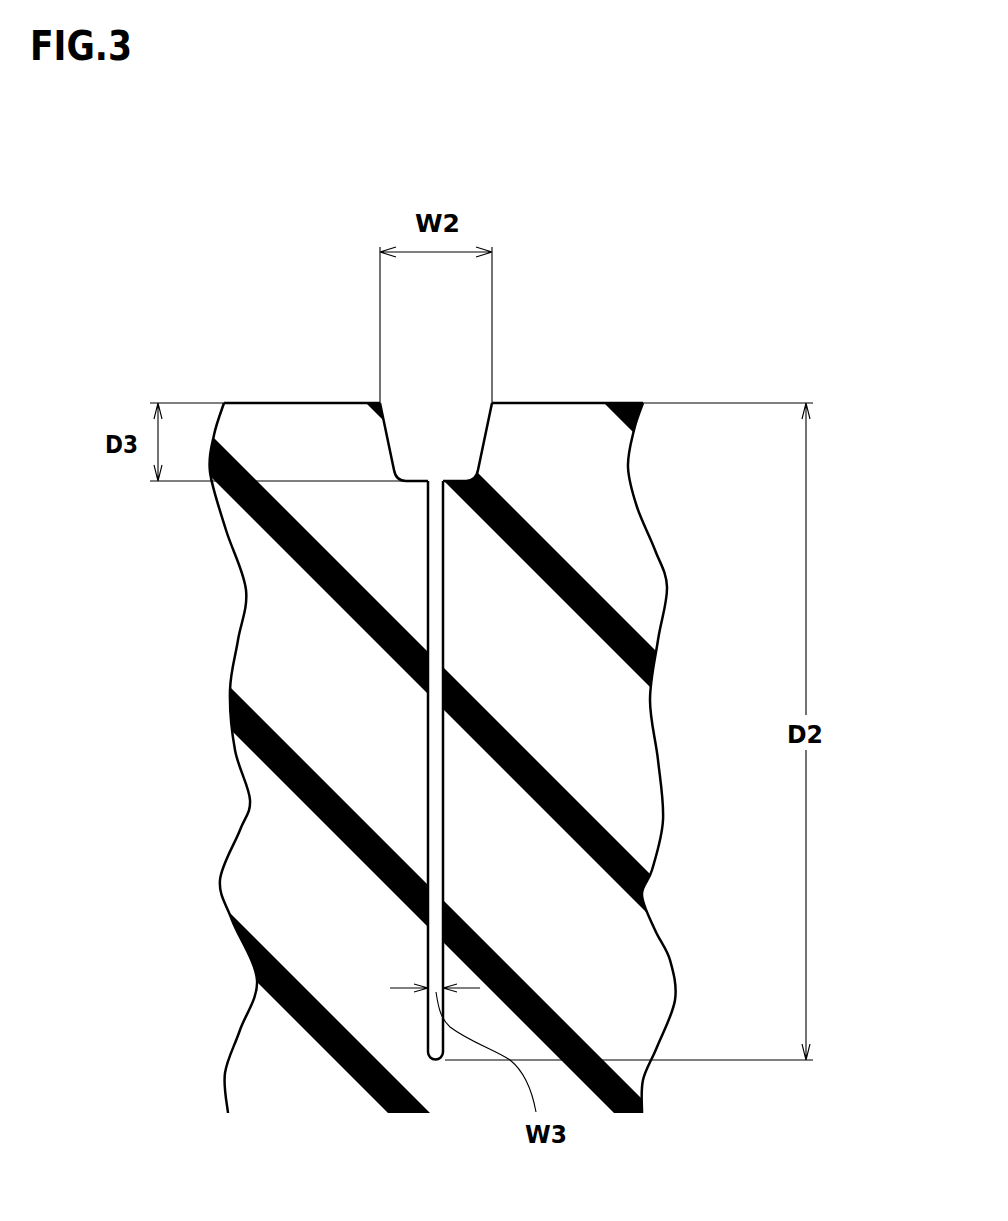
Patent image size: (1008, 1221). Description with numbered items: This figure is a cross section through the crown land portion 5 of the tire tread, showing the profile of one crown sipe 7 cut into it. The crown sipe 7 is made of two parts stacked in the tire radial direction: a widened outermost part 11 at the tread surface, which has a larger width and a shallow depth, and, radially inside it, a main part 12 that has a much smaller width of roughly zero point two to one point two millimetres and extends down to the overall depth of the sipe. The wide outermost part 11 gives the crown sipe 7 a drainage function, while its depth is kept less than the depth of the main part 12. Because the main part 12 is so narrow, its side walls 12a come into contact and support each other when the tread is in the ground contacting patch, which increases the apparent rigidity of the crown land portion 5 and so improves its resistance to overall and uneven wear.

The crown land portion 5 is at (300, 402).
The crown sipe 7 is at (716, 289).
The widened outermost part 11 is at (445, 430).
The main part 12 is at (434, 670).
The side walls 12a is at (433, 912).